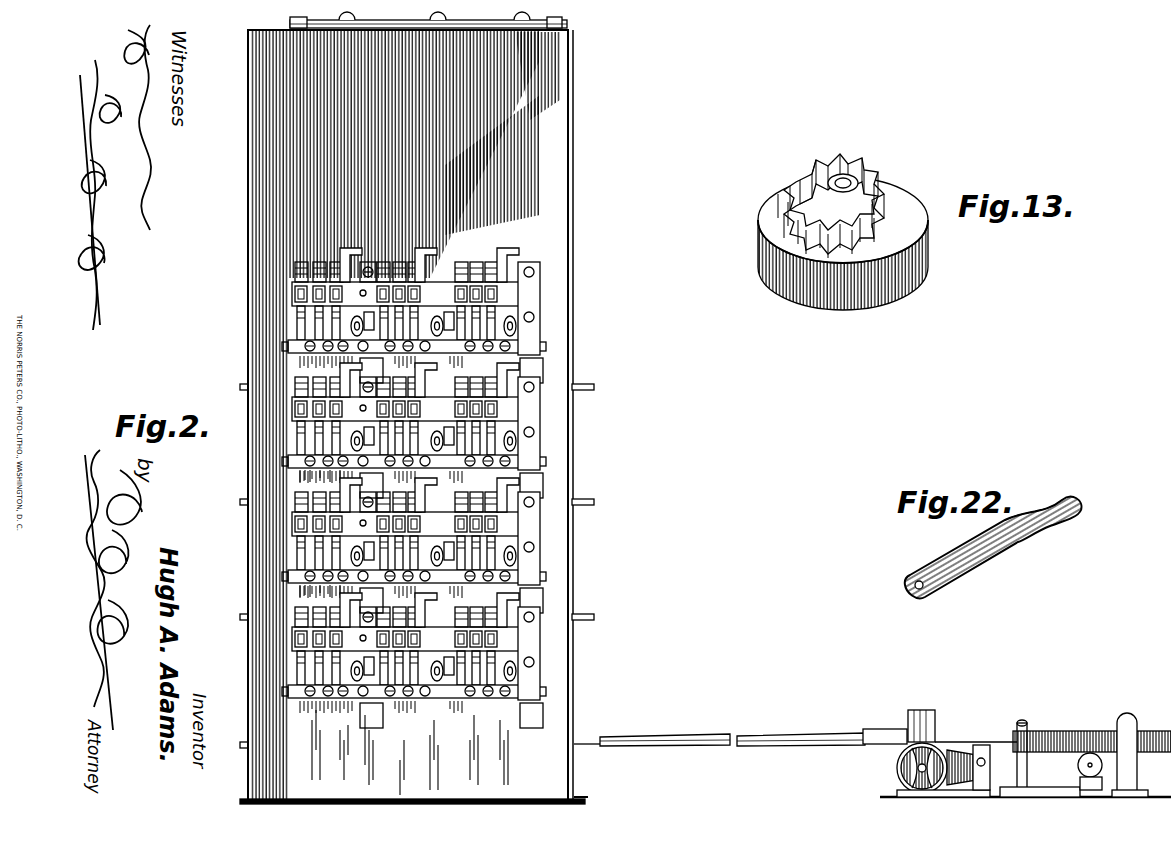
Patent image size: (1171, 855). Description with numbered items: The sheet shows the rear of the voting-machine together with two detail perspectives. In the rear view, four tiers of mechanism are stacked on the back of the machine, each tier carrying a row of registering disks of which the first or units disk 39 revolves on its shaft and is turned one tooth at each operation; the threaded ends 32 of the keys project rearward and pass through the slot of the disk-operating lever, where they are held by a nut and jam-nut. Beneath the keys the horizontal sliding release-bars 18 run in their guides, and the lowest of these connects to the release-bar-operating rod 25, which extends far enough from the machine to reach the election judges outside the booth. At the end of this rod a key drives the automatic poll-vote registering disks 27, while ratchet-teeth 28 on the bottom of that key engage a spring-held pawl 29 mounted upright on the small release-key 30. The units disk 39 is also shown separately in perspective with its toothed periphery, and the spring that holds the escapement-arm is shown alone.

In FIG. 2, the units disk 39 is at (349, 256).
In FIG. 13, the units disk 39 is at (825, 270).
In FIG. 2, the threaded ends 32 is at (533, 318).
In FIG. 2, the release-bars 18 is at (596, 387).
In FIG. 2, the release-bar-operating rod 25 is at (722, 733).
In FIG. 2, the poll-vote registering disks 27 is at (897, 766).
In FIG. 2, the ratchet-teeth 28 is at (1062, 757).
In FIG. 2, the pawl 29 is at (1092, 741).
In FIG. 2, the release-key 30 is at (1097, 752).